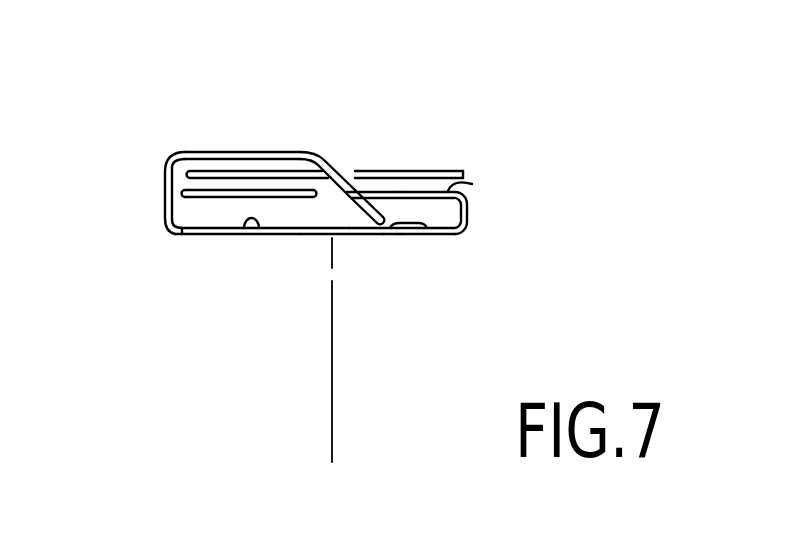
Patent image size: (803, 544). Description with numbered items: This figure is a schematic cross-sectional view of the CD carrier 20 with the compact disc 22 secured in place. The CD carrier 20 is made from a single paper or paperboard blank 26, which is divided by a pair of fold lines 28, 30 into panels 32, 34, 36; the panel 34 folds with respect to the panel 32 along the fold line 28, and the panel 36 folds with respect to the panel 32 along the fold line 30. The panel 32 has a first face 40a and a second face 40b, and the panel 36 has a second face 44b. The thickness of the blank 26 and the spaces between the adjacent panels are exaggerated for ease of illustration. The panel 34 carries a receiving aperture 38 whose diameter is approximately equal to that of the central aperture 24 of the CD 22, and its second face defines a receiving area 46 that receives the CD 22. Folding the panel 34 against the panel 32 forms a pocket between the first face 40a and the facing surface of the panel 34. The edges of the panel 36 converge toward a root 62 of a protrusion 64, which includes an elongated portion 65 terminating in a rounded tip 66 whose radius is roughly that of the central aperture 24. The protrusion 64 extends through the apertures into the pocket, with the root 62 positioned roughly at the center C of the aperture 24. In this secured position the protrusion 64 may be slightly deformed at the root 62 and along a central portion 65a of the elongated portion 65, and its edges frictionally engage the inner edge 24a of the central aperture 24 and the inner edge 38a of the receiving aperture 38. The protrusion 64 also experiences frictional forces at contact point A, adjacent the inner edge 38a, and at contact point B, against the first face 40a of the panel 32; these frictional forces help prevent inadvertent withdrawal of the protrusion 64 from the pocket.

The CD carrier 20 is at (598, 186).
The compact disc 22 is at (464, 175).
The central aperture 24 is at (352, 190).
The inner edge of the central aperture 24a is at (360, 172).
The paperboard blank 26 is at (193, 248).
The fold line 28 is at (467, 213).
The fold line 30 is at (175, 232).
The panel 32 is at (266, 238).
The panel 34 is at (467, 202).
The panel 36 is at (205, 150).
The receiving aperture 38 is at (318, 194).
The inner edge of the receiving aperture 38a is at (312, 194).
The first face of panel 32 40a is at (247, 228).
The second face of panel 32 40b is at (385, 236).
The second face of panel 36 44b is at (242, 152).
The receiving area 46 is at (472, 184).
The root of the protrusion 62 is at (319, 159).
The protrusion 64 is at (364, 229).
The elongated portion 65 is at (386, 215).
The central portion of the elongated section 65a is at (349, 229).
The rounded tip 66 is at (425, 235).
The contact point A is at (362, 195).
The contact point B is at (400, 234).
The center of the aperture C is at (332, 425).